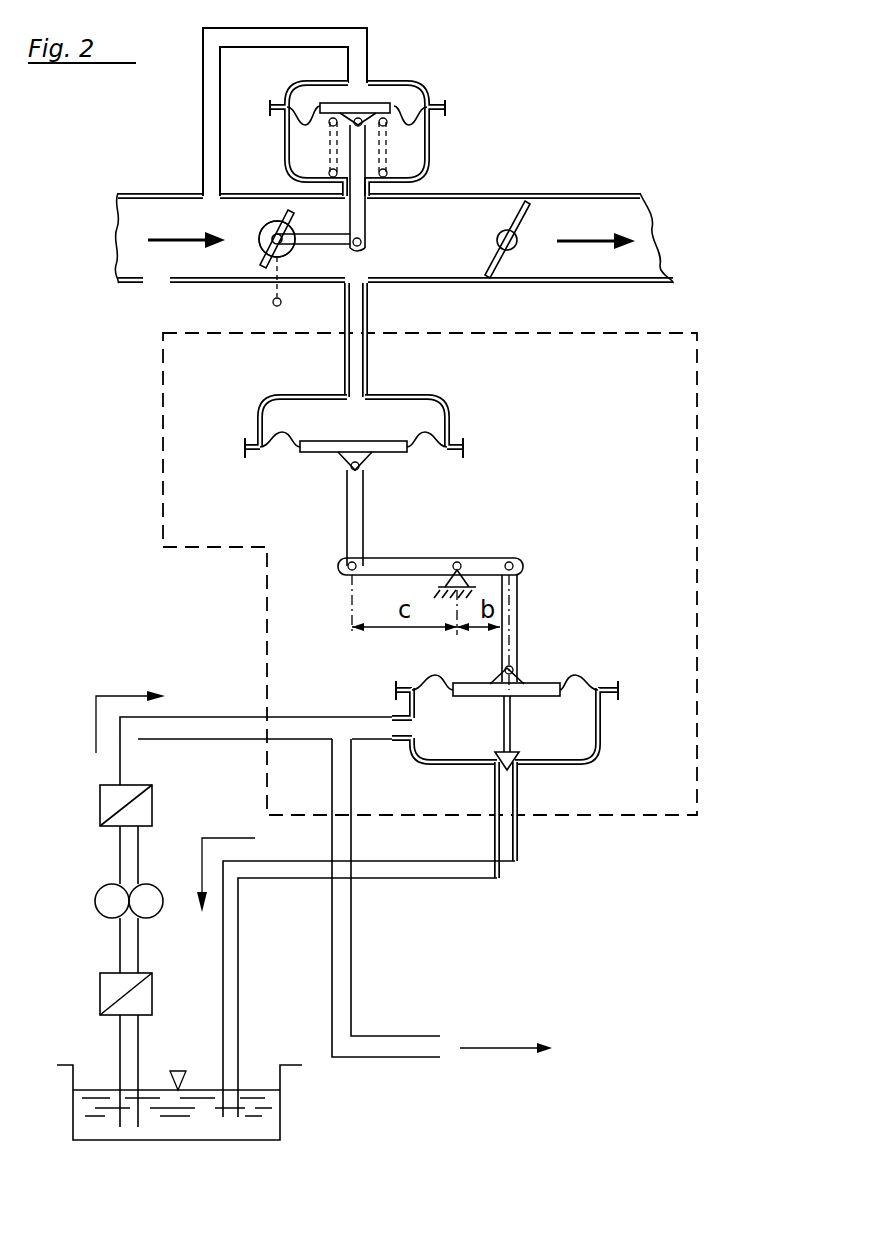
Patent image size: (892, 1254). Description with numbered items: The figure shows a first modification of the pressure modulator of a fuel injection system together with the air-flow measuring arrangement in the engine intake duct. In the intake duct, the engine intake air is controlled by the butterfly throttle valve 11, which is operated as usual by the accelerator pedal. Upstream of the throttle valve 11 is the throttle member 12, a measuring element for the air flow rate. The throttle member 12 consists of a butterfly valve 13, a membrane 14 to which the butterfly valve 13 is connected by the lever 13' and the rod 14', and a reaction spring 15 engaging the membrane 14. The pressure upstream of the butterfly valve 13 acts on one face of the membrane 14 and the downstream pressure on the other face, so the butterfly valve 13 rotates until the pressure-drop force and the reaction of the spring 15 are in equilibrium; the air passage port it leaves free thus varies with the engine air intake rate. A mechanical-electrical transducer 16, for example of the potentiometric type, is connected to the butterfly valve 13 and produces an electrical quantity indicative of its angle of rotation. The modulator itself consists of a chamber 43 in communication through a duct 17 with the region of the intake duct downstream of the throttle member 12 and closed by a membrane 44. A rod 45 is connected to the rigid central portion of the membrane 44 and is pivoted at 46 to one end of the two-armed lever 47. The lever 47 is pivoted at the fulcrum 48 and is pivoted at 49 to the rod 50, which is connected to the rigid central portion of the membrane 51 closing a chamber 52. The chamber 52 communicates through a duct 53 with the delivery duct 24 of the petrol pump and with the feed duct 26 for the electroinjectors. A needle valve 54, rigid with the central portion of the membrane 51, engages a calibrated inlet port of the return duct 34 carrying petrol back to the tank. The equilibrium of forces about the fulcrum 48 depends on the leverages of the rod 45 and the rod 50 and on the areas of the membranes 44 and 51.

The butterfly throttle valve 11 is at (492, 254).
The throttle member 12 is at (285, 185).
The butterfly valve 13 is at (250, 258).
The lever 13' is at (313, 256).
The membrane 14 is at (373, 139).
The rod 14' is at (386, 188).
The reaction spring 15 is at (385, 158).
The mechanical-electrical transducer 16 is at (264, 230).
The duct 17 is at (366, 356).
The delivery duct 24 is at (213, 716).
The feed duct 26 is at (345, 944).
The return duct 34 is at (503, 790).
The chamber 43 is at (312, 412).
The membrane 44 is at (285, 455).
The rod 45 is at (347, 525).
The pivot 46 is at (348, 566).
The two-armed lever 47 is at (400, 562).
The fulcrum 48 is at (461, 563).
The pivot 49 is at (513, 566).
The rod 50 is at (510, 632).
The membrane 51 is at (582, 686).
The chamber 52 is at (555, 740).
The duct 53 is at (374, 724).
The needle valve 54 is at (505, 722).